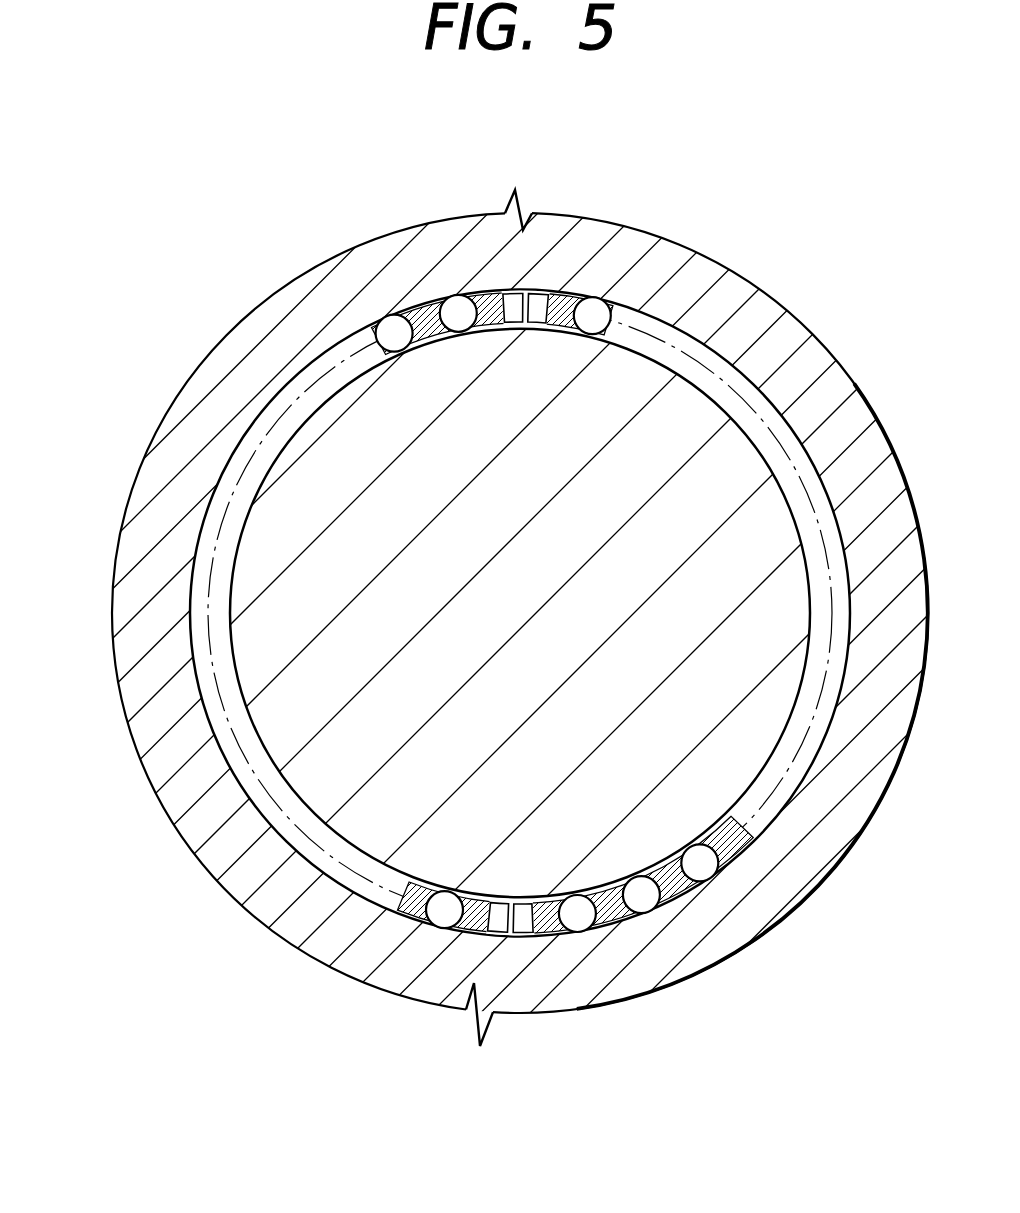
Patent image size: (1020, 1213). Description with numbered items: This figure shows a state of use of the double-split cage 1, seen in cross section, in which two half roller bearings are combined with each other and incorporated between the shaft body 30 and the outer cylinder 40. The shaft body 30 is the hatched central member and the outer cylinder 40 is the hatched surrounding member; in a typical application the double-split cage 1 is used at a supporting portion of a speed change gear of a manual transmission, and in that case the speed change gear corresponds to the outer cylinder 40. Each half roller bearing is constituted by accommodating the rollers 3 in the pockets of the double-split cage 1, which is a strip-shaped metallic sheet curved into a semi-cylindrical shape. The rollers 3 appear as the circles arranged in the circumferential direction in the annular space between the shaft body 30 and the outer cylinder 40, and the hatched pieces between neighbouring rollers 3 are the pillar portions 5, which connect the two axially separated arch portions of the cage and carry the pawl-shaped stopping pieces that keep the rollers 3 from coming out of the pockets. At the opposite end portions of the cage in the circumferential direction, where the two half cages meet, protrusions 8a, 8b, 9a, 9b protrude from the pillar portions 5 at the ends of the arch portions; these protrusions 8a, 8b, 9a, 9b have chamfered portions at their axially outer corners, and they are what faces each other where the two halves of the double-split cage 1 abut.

The double-split cage 1 is at (510, 606).
The rollers 3 is at (590, 323).
The pillar portions 5 is at (488, 290).
The protrusion 8a is at (535, 314).
The protrusion 8b is at (522, 912).
The protrusion 9a is at (512, 320).
The protrusion 9b is at (507, 912).
The shaft body 30 is at (335, 742).
The outer cylinder 40 is at (793, 336).